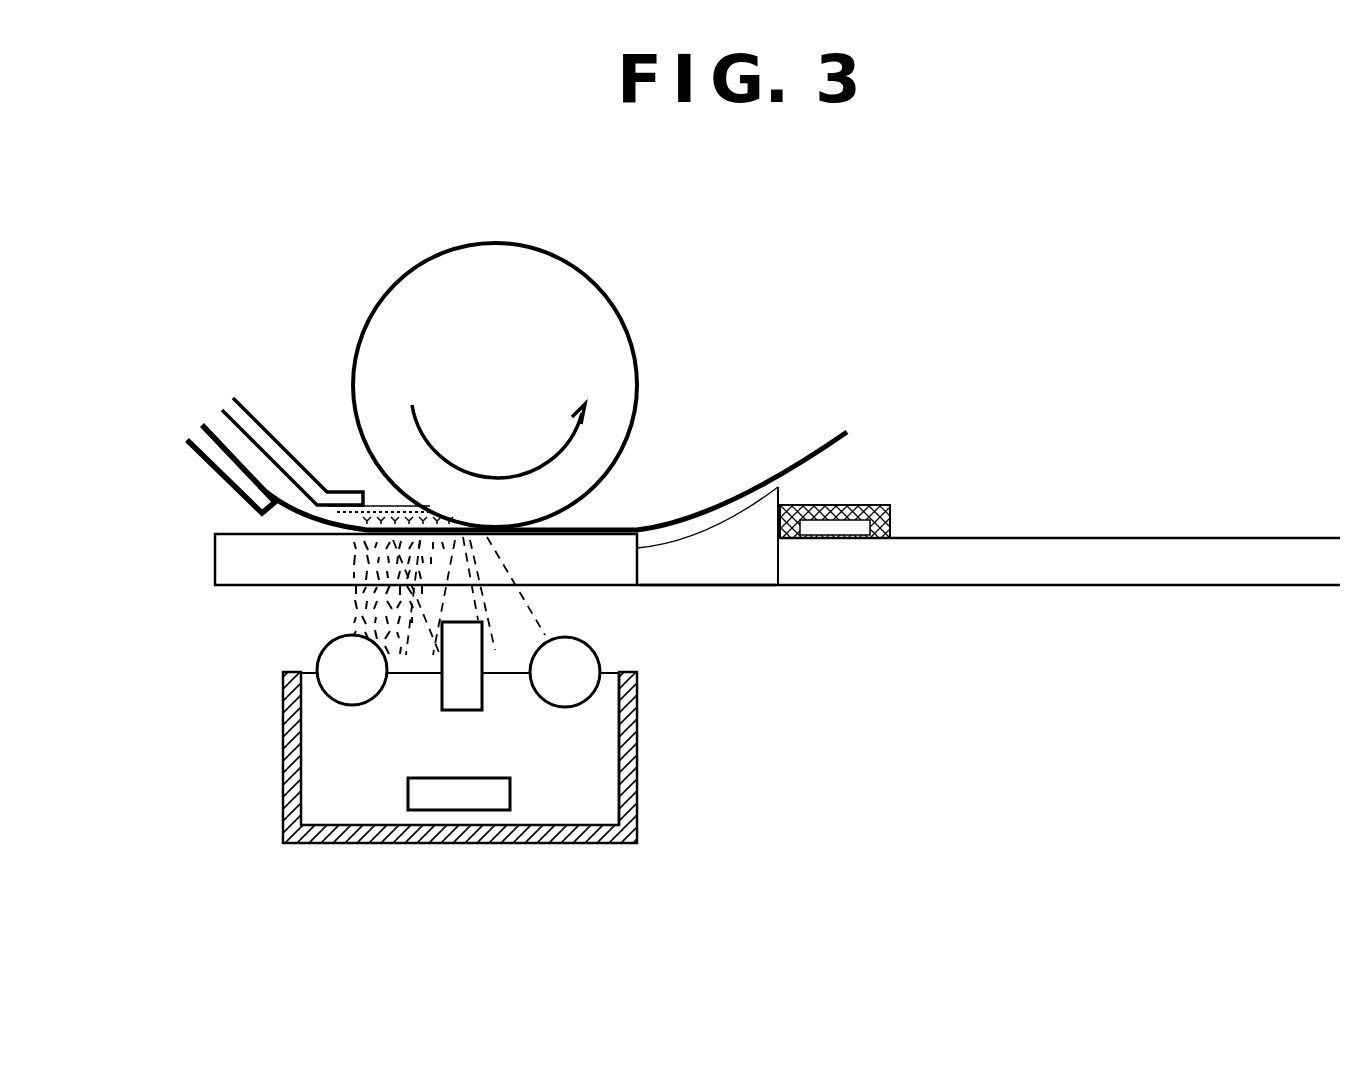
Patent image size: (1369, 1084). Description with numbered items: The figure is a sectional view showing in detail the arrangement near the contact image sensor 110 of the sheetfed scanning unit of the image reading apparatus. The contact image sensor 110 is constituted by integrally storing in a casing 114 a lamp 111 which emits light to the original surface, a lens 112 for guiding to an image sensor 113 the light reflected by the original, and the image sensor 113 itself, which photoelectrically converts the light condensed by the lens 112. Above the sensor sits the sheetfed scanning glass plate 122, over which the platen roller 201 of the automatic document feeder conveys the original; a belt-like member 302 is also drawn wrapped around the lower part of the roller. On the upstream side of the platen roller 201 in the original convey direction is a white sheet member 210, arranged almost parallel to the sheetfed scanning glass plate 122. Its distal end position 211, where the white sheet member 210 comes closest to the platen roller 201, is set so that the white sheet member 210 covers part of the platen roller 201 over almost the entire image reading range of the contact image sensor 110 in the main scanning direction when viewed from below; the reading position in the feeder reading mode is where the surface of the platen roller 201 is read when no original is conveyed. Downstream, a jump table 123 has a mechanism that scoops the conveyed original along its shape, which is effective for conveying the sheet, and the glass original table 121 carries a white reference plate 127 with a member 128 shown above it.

The platen roller 201 is at (618, 312).
The intermediate transfer belt 302 is at (698, 508).
The white sheet member 210 is at (387, 507).
The distal end position 211 is at (430, 507).
The sheetfed scanning glass plate 122 is at (216, 552).
The glass original table 121 is at (1062, 570).
The jump table 123 is at (692, 587).
The white reference plate 127 is at (848, 540).
The seal member 128 is at (860, 505).
The contact image sensor 110 is at (447, 843).
The lamp 111 is at (332, 688).
The lens 112 is at (470, 712).
The image sensor 113 is at (413, 797).
The casing 114 is at (578, 843).